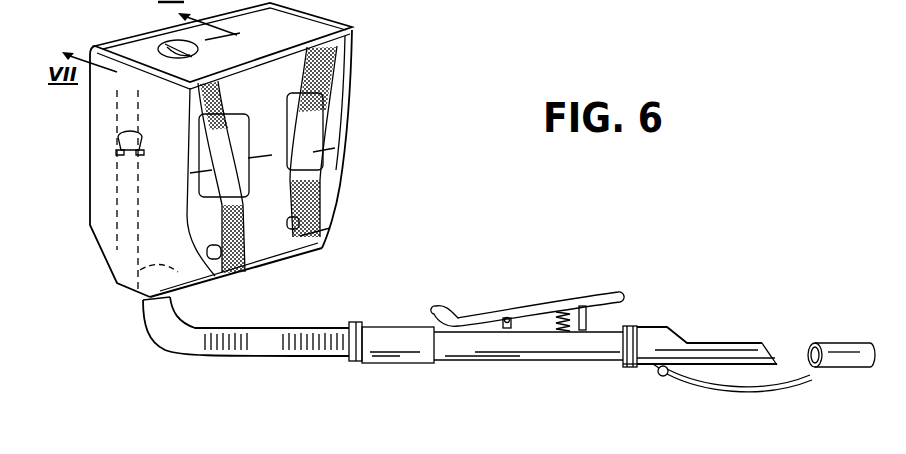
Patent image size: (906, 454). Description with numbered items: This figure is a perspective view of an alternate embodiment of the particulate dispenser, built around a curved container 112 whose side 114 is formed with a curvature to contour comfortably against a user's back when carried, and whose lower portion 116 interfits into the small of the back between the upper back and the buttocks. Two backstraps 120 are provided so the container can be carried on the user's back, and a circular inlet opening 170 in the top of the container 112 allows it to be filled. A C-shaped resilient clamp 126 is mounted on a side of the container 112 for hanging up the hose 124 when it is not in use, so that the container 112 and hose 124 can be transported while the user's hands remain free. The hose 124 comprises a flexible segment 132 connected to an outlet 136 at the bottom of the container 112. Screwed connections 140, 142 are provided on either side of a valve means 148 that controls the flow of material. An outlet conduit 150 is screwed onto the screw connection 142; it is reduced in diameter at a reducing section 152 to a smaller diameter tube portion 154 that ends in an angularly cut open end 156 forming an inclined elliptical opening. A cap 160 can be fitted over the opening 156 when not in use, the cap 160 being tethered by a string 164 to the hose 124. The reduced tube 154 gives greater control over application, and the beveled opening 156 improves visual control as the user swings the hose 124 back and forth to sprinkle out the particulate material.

The curved container 112 is at (348, 101).
The side 114 is at (348, 58).
The lower portion 116 is at (342, 200).
The backstraps 120 is at (243, 208).
The hose 124 is at (644, 319).
The C-shaped resilient clamp 126 is at (118, 148).
The flexible segment 132 is at (227, 357).
The outlet 136 is at (198, 293).
The screwed connection 140 is at (356, 363).
The screwed connection 142 is at (630, 366).
The valve means 148 is at (563, 297).
The outlet conduit 150 is at (666, 376).
The reducing section 152 is at (680, 340).
The smaller diameter tube portion 154 is at (722, 340).
The angularly cut open end 156 is at (767, 340).
The cap 160 is at (827, 342).
The string 164 is at (763, 393).
The circular inlet opening 170 is at (166, 43).